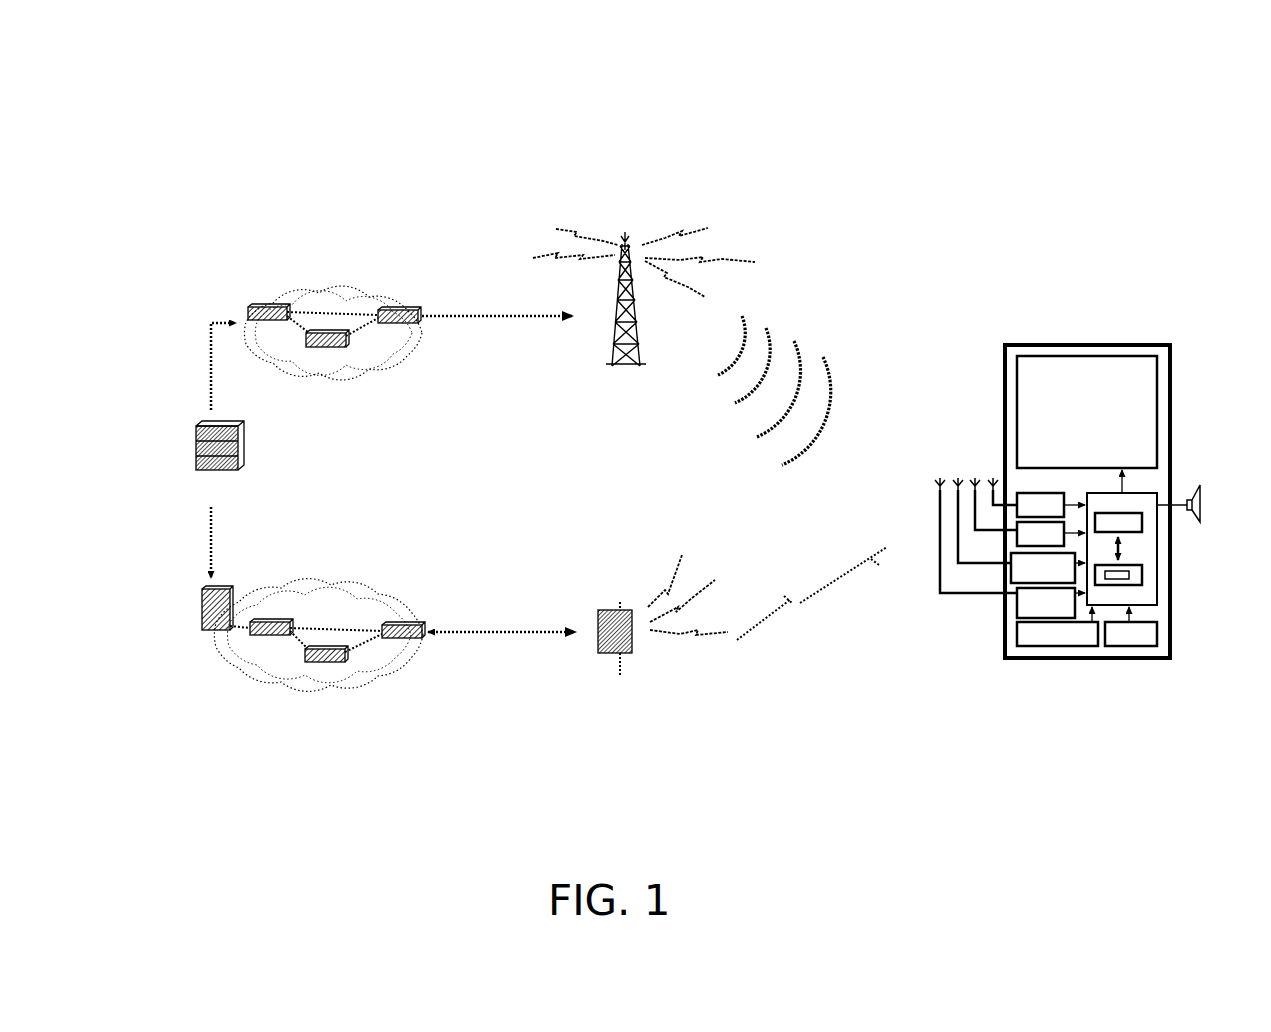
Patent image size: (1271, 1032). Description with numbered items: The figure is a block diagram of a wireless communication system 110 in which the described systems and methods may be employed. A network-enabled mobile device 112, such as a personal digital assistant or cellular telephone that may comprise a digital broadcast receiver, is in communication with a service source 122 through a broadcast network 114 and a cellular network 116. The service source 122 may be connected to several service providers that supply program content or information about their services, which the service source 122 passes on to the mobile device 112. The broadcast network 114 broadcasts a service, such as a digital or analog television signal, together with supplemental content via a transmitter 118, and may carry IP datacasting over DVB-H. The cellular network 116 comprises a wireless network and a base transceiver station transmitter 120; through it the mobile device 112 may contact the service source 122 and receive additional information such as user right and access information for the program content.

The wireless communication system 110 is at (612, 132).
The mobile device 112 is at (1053, 661).
The broadcast network 114 is at (455, 283).
The cellular network 116 is at (490, 684).
The transmitter 118 is at (727, 210).
The base transceiver station transmitter 120 is at (690, 685).
The service source 122 is at (228, 465).